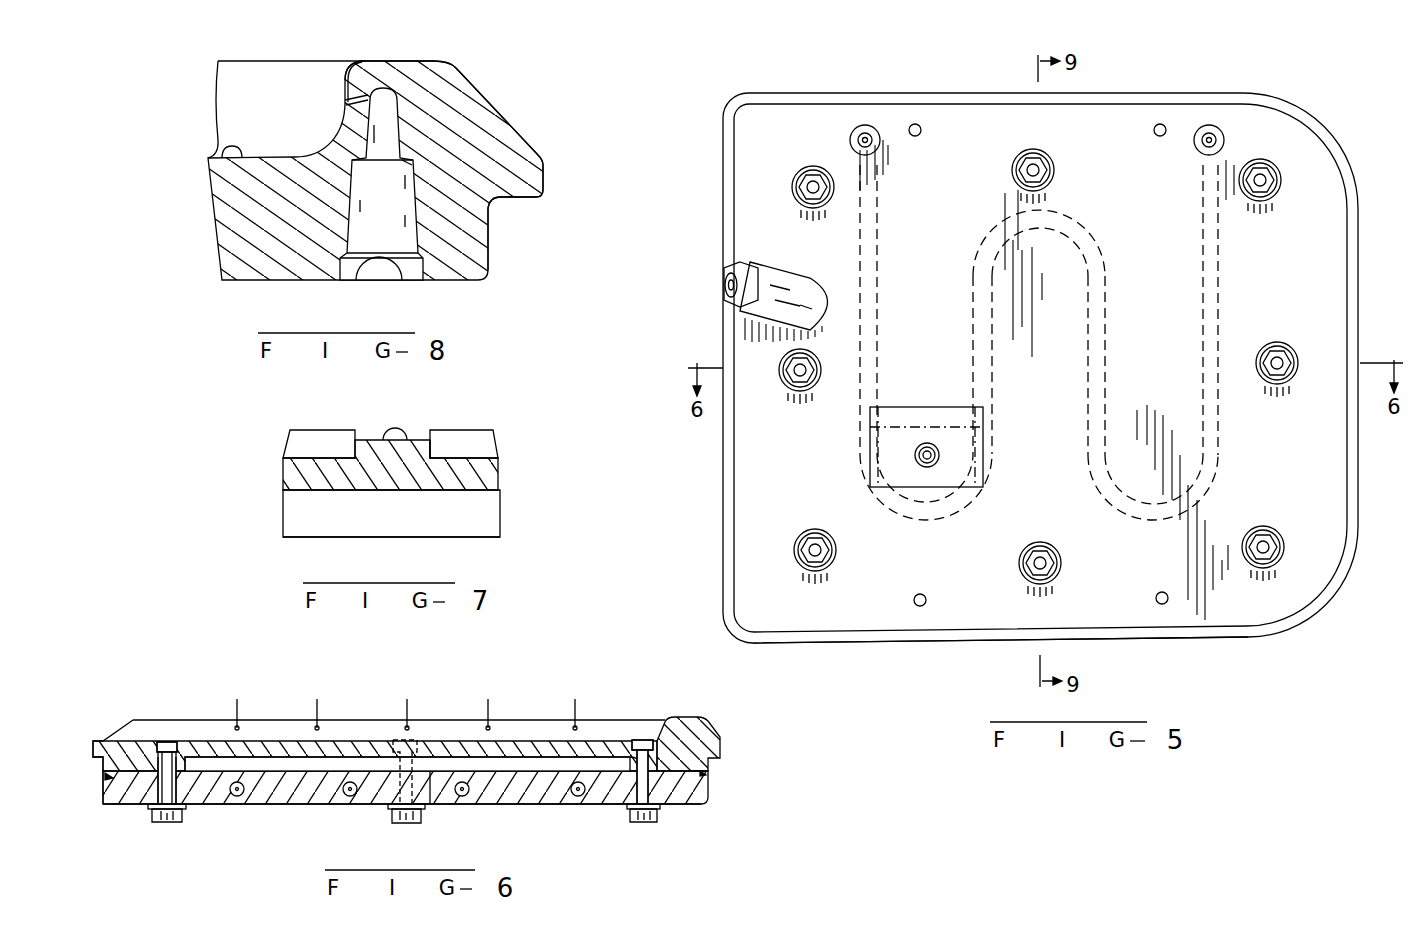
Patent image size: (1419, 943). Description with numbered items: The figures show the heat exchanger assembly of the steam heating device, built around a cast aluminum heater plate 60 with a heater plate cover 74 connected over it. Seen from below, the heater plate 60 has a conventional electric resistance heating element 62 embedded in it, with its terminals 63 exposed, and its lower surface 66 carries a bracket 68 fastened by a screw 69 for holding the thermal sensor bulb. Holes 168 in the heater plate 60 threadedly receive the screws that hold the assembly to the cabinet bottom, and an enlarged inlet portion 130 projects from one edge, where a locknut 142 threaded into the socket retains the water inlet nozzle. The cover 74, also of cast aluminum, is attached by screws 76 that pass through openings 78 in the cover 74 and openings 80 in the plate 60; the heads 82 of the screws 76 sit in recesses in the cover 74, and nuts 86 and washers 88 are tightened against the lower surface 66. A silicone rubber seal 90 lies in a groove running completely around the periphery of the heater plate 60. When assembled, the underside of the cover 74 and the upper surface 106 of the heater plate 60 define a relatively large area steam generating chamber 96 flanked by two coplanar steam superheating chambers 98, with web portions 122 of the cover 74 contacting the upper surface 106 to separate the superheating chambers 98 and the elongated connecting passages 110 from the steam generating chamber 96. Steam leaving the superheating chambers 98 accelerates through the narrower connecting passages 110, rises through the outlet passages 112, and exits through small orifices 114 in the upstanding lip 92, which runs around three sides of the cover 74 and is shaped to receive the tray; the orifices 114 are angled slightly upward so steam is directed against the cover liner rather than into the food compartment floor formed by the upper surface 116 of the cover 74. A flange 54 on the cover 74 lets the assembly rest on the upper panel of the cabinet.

In FIG. 8, the flange 54 is at (535, 172).
In FIG. 6, the flange 54 is at (95, 740).
In FIG. 6, the heater plate 60 is at (708, 797).
In FIG. 5, the heater plate 60 is at (1297, 106).
In FIG. 6, the electric resistance heating element 62 is at (238, 797).
In FIG. 5, the electric resistance heating element 62 is at (852, 180).
In FIG. 5, the terminals 63 is at (868, 128).
In FIG. 6, the lower surface of heater plate 66 is at (505, 806).
In FIG. 5, the lower surface of heater plate 66 is at (1231, 598).
In FIG. 5, the bracket 68 is at (953, 430).
In FIG. 5, the screw 69 is at (926, 443).
In FIG. 8, the heater plate cover 74 is at (240, 280).
In FIG. 7, the heater plate cover 74 is at (503, 518).
In FIG. 6, the heater plate cover 74 is at (684, 746).
In FIG. 6, the screws 76 is at (165, 742).
In FIG. 6, the openings in heater plate cover 78 is at (166, 750).
In FIG. 6, the openings in heater plate 80 is at (160, 783).
In FIG. 6, the heads of screws 82 is at (175, 752).
In FIG. 6, the nuts 86 is at (175, 822).
In FIG. 5, the nuts 86 is at (811, 178).
In FIG. 6, the washers 88 is at (186, 809).
In FIG. 5, the washers 88 is at (1017, 160).
In FIG. 6, the silicone rubber seal 90 is at (112, 777).
In FIG. 8, the upstanding lip 92 is at (387, 70).
In FIG. 6, the upstanding lip 92 is at (459, 722).
In FIG. 7, the steam generating chamber 96 is at (470, 440).
In FIG. 6, the steam generating chamber 96 is at (527, 763).
In FIG. 7, the steam superheating chambers 98 is at (318, 438).
In FIG. 7, the upper surface of heater plate 106 is at (357, 538).
In FIG. 6, the upper surface of heater plate 106 is at (450, 767).
In FIG. 8, the elongated connecting passages 110 is at (378, 270).
In FIG. 7, the elongated connecting passages 110 is at (392, 432).
In FIG. 8, the outlet passages 112 is at (488, 268).
In FIG. 8, the orifices 114 is at (345, 103).
In FIG. 6, the orifices 114 is at (403, 701).
In FIG. 8, the upper surface of heater plate cover 116 is at (207, 140).
In FIG. 7, the web portions 122 is at (423, 435).
In FIG. 5, the enlarged inlet portion 130 is at (780, 282).
In FIG. 5, the locknut 142 is at (742, 270).
In FIG. 5, the holes 168 is at (917, 124).